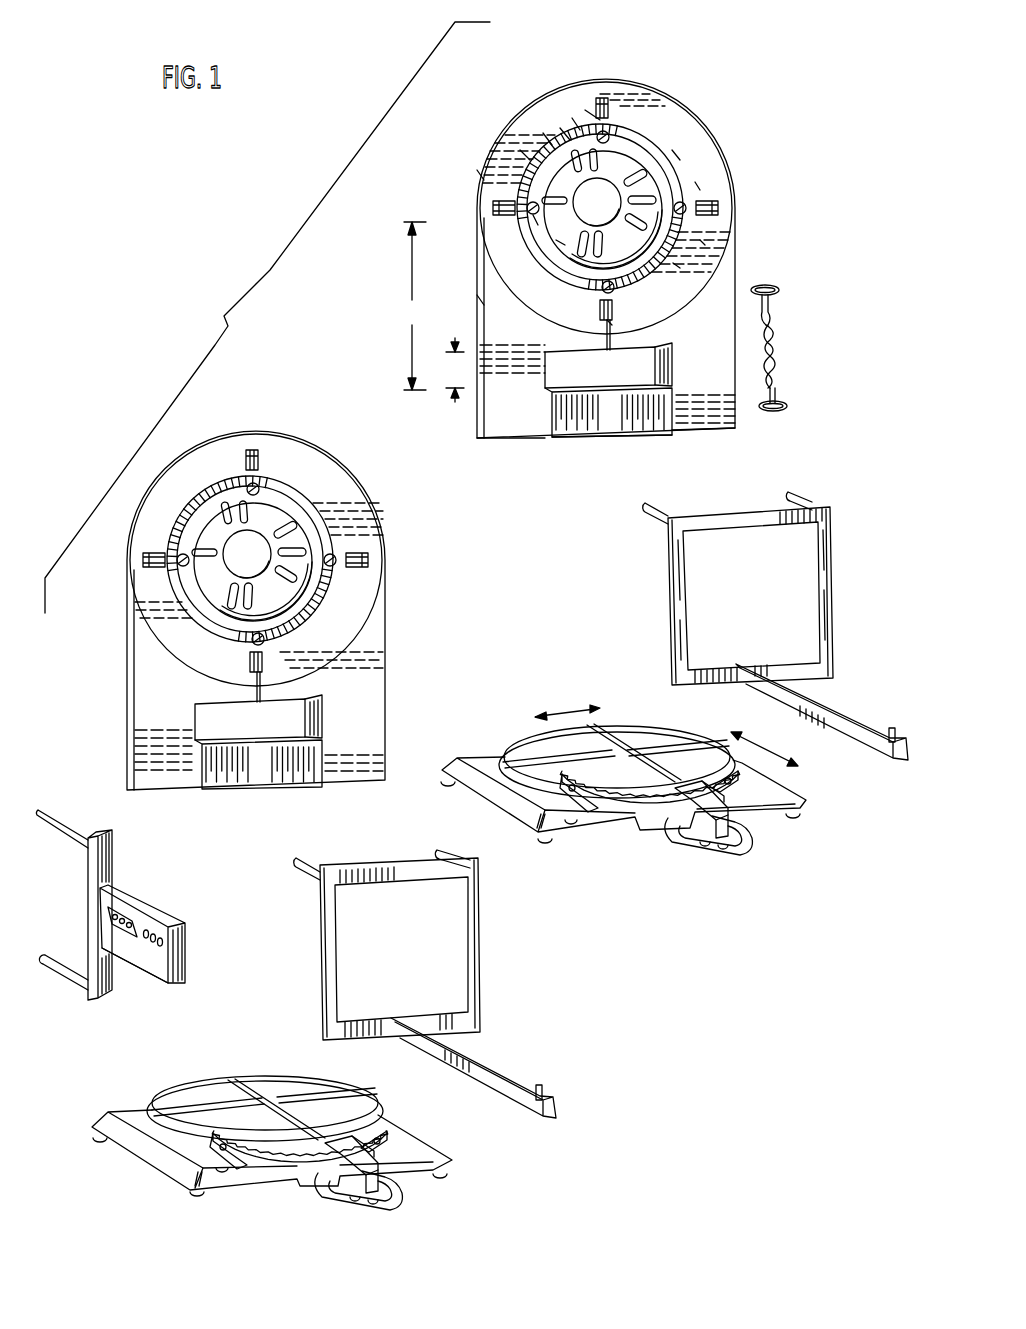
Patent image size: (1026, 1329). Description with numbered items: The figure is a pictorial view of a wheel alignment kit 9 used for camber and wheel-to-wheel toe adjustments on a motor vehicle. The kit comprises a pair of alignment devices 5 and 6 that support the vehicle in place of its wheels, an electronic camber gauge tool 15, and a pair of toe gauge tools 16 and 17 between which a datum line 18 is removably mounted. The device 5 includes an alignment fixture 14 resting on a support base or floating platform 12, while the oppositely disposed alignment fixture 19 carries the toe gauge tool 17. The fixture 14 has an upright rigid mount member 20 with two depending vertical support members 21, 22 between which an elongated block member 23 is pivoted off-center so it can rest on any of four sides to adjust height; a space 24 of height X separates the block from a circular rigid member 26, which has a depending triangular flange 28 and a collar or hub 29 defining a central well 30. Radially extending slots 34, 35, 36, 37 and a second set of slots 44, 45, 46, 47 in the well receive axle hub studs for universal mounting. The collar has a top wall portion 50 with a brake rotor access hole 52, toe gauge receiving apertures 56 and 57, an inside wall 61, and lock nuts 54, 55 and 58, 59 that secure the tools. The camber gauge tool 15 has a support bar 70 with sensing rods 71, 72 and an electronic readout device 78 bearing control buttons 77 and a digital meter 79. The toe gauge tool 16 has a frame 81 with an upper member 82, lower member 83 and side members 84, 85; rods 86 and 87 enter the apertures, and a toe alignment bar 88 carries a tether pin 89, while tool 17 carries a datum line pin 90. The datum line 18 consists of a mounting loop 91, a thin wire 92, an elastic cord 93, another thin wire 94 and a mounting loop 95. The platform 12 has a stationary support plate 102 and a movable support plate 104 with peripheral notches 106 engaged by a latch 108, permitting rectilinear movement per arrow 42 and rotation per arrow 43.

The alignment device 5 is at (633, 766).
The alignment device 6 is at (168, 1086).
The wheel alignment kit 9 is at (222, 318).
The support base or floating platform 12 is at (790, 825).
The alignment fixture 14 is at (762, 127).
The electronic camber gauge tool 15 is at (134, 907).
The toe gauge tool 16 is at (757, 605).
The toe gauge tool 17 is at (416, 984).
The datum line 18 is at (804, 346).
The alignment fixture 19 is at (333, 424).
The upright rigid mount member 20 is at (627, 201).
The vertical support member 21 is at (517, 430).
The vertical support member 22 is at (717, 422).
The elongated block member 23 is at (607, 430).
The space 24 is at (582, 379).
The circular rigid member 26 is at (482, 177).
The triangular flange 28 is at (492, 300).
The collar or hub 29 is at (543, 133).
The well 30 is at (612, 322).
The radially extending slot 34 is at (640, 122).
The radially extending slot 35 is at (695, 182).
The radially extending slot 36 is at (692, 258).
The radially extending slot 37 is at (556, 240).
The arrow 42 is at (777, 752).
The arrow 43 is at (565, 700).
The radially extending slot 44 is at (572, 118).
The radially extending slot 45 is at (672, 150).
The radially extending slot 46 is at (700, 240).
The radially extending slot 47 is at (673, 263).
The top wall portion 50 is at (560, 128).
The brake rotor access hole 52 is at (585, 110).
The lock nut 54 is at (601, 98).
The lock nut 55 is at (611, 332).
The toe gauge receiving aperture 56 is at (688, 203).
The toe gauge receiving aperture 57 is at (535, 215).
The lock nut 58 is at (497, 210).
The lock nut 59 is at (718, 208).
The inside wall 61 is at (520, 150).
The support bar 70 is at (113, 862).
The sensing rod 71 is at (67, 823).
The sensing rod 72 is at (63, 955).
The control buttons 77 is at (165, 915).
The electronic readout device 78 is at (153, 983).
The digital meter 79 is at (130, 918).
The frame 81 is at (723, 596).
The upper member 82 is at (752, 522).
The lower member 83 is at (783, 662).
The side member 84 is at (683, 612).
The side member 85 is at (822, 602).
The rod 86 is at (803, 493).
The rod 87 is at (652, 518).
The toe alignment bar 88 is at (830, 707).
The datum line engagement or tether pin 89 is at (895, 730).
The datum line pin 90 is at (527, 1083).
The mounting ring or loop 91 is at (780, 290).
The thin wire 92 is at (770, 305).
The elastic cord 93 is at (785, 340).
The thin wire 94 is at (778, 388).
The mounting loop 95 is at (788, 406).
The stationary support plate 102 is at (712, 835).
The movable support plate 104 is at (655, 735).
The notches or grooves 106 is at (607, 803).
The latch 108 is at (723, 853).